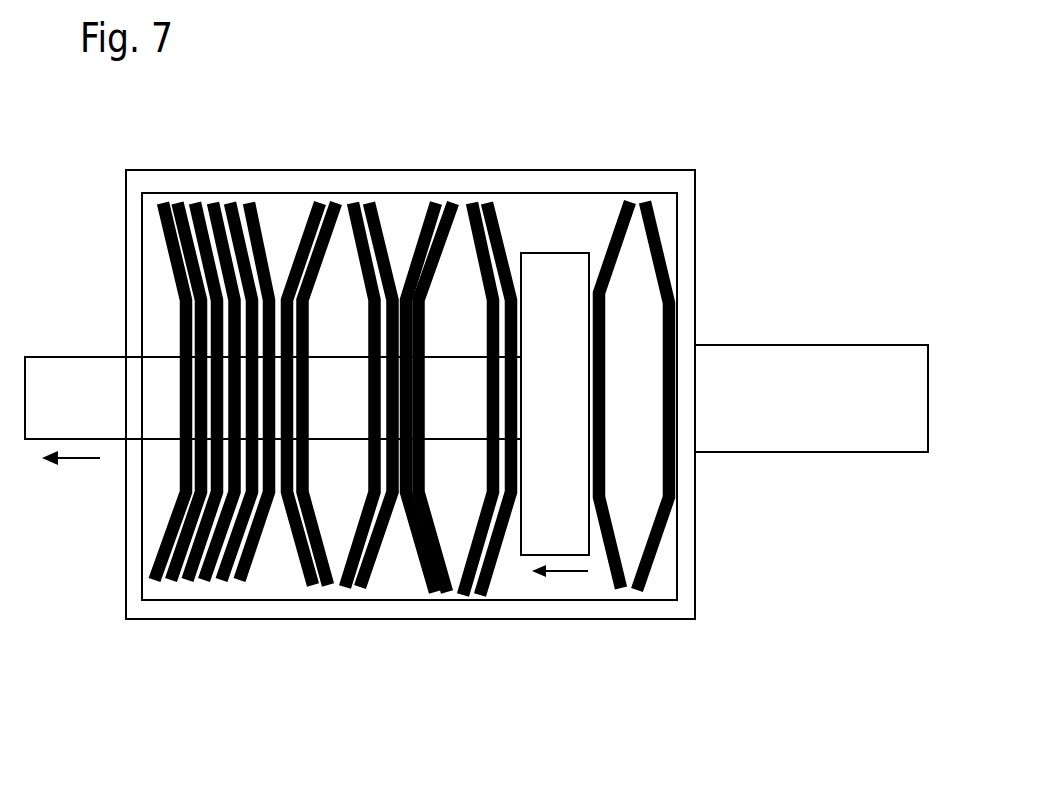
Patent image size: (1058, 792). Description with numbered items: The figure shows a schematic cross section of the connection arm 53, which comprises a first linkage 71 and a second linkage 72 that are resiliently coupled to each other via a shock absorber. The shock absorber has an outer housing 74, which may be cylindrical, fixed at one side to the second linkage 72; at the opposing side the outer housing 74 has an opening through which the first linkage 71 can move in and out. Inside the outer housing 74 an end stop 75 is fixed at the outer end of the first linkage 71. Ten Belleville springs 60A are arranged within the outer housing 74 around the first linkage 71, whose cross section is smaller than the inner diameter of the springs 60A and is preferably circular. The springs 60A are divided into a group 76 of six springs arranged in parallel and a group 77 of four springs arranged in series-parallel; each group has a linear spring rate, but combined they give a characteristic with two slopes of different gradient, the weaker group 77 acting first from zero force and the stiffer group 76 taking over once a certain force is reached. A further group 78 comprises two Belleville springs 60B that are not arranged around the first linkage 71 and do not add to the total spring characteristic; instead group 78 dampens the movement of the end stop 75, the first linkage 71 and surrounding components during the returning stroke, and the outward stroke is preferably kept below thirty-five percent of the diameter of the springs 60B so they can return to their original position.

The connection arm 53 is at (746, 167).
The Belleville springs 60A is at (350, 200).
The Belleville springs 60B is at (638, 200).
The first linkage 71 is at (106, 357).
The second linkage 72 is at (843, 345).
The outer housing 74 is at (655, 615).
The end stop 75 is at (558, 253).
The group 76 is at (273, 633).
The group 77 is at (401, 414).
The group 78 is at (627, 414).